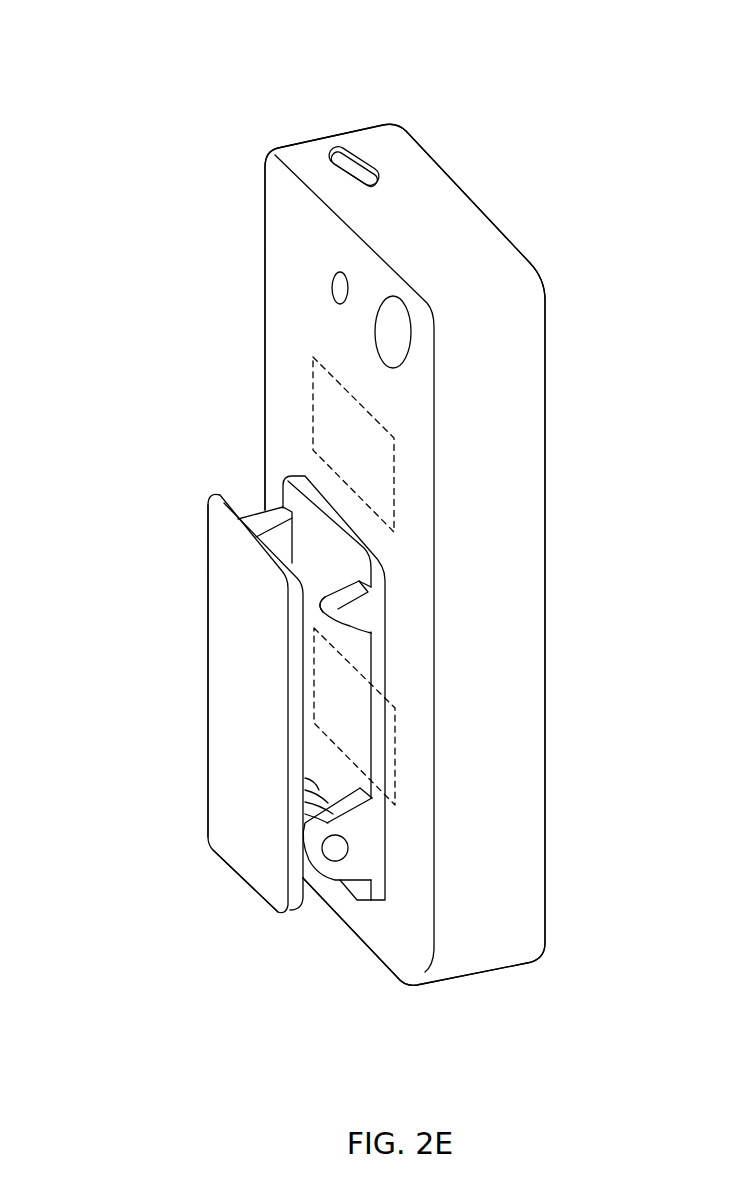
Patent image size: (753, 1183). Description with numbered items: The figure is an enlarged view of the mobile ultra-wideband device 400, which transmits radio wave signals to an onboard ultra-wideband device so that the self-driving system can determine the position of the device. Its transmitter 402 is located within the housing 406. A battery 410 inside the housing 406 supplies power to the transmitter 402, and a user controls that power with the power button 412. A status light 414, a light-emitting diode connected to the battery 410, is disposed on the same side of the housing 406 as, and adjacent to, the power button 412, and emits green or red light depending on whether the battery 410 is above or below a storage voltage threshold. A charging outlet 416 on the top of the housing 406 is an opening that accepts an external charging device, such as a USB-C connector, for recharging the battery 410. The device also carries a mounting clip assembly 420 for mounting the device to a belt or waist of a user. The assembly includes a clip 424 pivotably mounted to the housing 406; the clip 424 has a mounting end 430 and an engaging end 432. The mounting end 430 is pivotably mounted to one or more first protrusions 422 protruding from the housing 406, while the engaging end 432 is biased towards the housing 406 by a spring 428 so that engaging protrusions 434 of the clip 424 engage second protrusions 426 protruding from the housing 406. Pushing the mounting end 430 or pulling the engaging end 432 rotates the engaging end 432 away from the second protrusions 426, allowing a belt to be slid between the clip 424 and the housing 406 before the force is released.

The mobile ultra-wideband device 400 is at (588, 997).
The transmitter 402 is at (400, 745).
The housing 406 is at (503, 872).
The battery 410 is at (394, 458).
The power button 412 is at (393, 332).
The status light 414 is at (335, 289).
The charging outlet 416 is at (348, 160).
The mounting clip assembly 420 is at (193, 632).
The first protrusions 422 is at (362, 860).
The clip 424 is at (237, 758).
The second protrusions 426 is at (358, 619).
The spring 428 is at (323, 784).
The mounting end 430 is at (245, 882).
The engaging end 432 is at (243, 503).
The engaging protrusions 434 is at (323, 605).